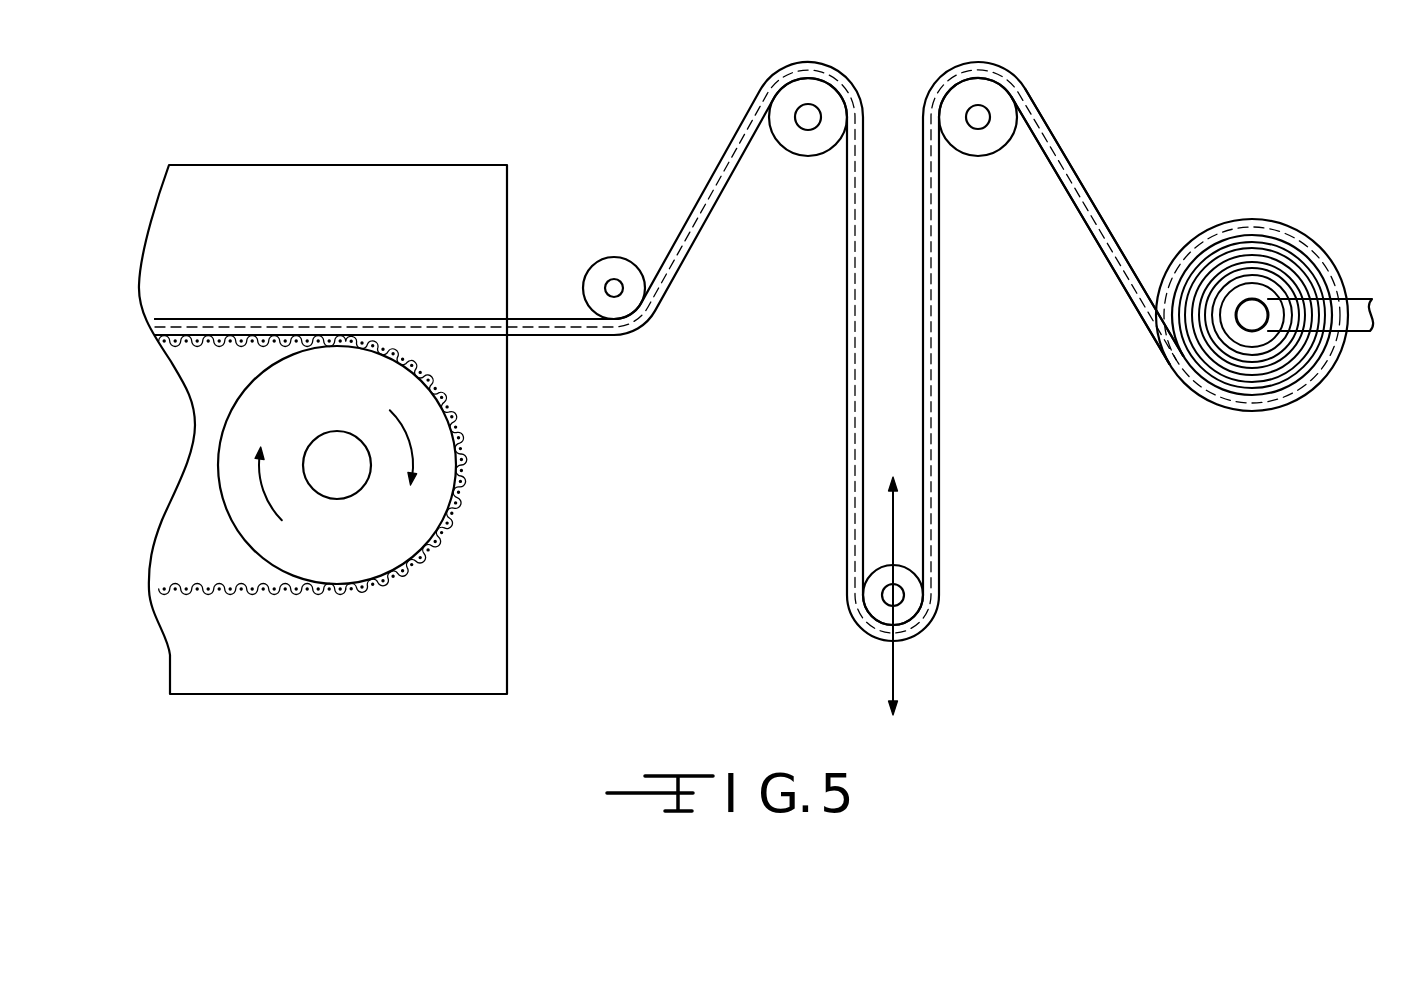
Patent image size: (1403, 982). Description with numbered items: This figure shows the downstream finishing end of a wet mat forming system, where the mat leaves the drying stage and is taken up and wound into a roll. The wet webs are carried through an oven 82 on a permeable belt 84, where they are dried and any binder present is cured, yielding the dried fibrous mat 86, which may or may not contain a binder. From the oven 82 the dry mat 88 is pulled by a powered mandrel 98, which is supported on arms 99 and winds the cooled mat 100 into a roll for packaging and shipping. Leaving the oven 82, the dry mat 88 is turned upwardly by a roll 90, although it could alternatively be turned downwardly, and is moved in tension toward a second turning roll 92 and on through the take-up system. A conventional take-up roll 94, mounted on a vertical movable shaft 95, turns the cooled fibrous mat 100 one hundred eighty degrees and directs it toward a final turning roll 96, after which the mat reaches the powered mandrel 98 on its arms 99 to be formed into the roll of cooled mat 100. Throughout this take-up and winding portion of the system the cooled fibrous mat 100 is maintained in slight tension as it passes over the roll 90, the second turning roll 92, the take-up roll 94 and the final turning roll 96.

The oven 82 is at (308, 165).
The permeable belt 84 is at (262, 598).
The dried fibrous mat 86 is at (402, 315).
The dry mat 88 is at (536, 318).
The roll 90 is at (607, 272).
The second turning roll 92 is at (820, 90).
The take-up roll 94 is at (905, 628).
The vertical movable shaft 95 is at (890, 596).
The final turning roll 96 is at (975, 92).
The powered mandrel 98 is at (1198, 398).
The arms 99 is at (1318, 248).
The cooled mat 100 is at (1224, 232).